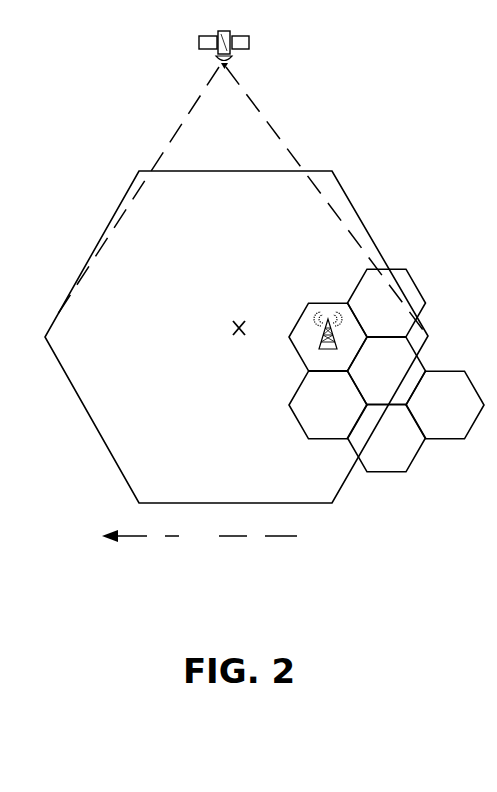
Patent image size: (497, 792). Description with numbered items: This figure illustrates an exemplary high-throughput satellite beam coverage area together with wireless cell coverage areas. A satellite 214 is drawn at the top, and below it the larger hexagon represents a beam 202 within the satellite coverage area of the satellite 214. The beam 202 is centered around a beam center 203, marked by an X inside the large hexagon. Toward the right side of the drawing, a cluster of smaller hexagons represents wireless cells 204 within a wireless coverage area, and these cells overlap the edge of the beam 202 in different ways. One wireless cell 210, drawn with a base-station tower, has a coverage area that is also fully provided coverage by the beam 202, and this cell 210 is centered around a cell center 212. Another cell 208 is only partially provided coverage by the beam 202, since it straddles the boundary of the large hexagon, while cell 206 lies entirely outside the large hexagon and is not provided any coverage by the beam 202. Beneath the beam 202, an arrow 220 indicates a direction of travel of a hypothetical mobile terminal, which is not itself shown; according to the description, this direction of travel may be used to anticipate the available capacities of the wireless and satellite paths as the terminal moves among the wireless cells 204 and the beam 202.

The beam 202 is at (219, 317).
The beam center 203 is at (191, 310).
The wireless cell 204 is at (286, 316).
The cell 206 is at (427, 472).
The cell 208 is at (379, 472).
The wireless cell 210 is at (368, 266).
The cell center 212 is at (379, 276).
The satellite 214 is at (172, 62).
The arrow 220 is at (199, 538).